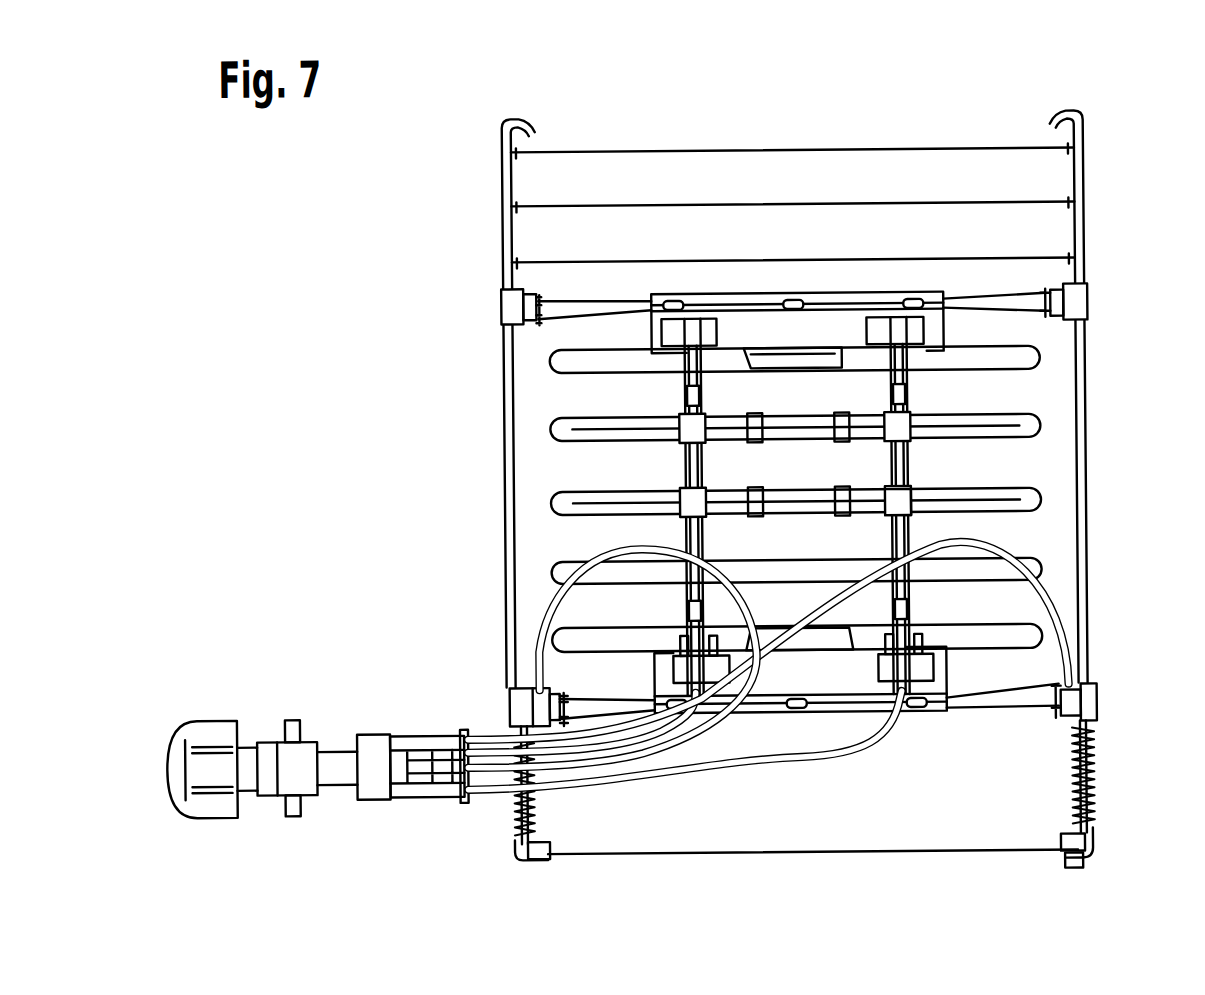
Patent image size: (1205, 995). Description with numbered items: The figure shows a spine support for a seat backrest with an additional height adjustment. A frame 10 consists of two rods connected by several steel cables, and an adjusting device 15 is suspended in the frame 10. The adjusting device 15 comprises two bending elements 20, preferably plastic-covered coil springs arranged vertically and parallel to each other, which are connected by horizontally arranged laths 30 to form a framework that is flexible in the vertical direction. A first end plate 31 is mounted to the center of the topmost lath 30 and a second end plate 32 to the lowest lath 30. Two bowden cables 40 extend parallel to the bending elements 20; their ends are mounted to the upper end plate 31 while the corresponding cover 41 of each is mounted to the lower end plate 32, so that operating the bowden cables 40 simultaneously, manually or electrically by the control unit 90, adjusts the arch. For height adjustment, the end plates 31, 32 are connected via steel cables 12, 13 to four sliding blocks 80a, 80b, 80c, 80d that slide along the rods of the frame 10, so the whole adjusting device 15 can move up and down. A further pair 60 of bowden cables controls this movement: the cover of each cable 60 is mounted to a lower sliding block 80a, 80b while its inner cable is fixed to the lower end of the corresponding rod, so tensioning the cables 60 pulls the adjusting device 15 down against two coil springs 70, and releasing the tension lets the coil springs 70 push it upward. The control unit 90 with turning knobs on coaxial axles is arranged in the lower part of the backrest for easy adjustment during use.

The frame 10 is at (1086, 171).
The steel cable 12 is at (586, 312).
The steel cable 13 is at (983, 697).
The adjusting device 15 is at (945, 530).
The bending element 20 is at (690, 457).
The lath 30 is at (560, 567).
The first end plate 31 is at (821, 338).
The second end plate 32 is at (835, 677).
The bowden cable 40 is at (912, 457).
The cover of the bowden cable 41 is at (562, 790).
The pair of bowden cables 60 is at (540, 608).
The coil spring 70 is at (510, 812).
The sliding block 80a is at (515, 702).
The sliding block 80b is at (1092, 693).
The sliding block 80c is at (1082, 303).
The sliding block 80d is at (507, 305).
The control unit 90 is at (338, 805).